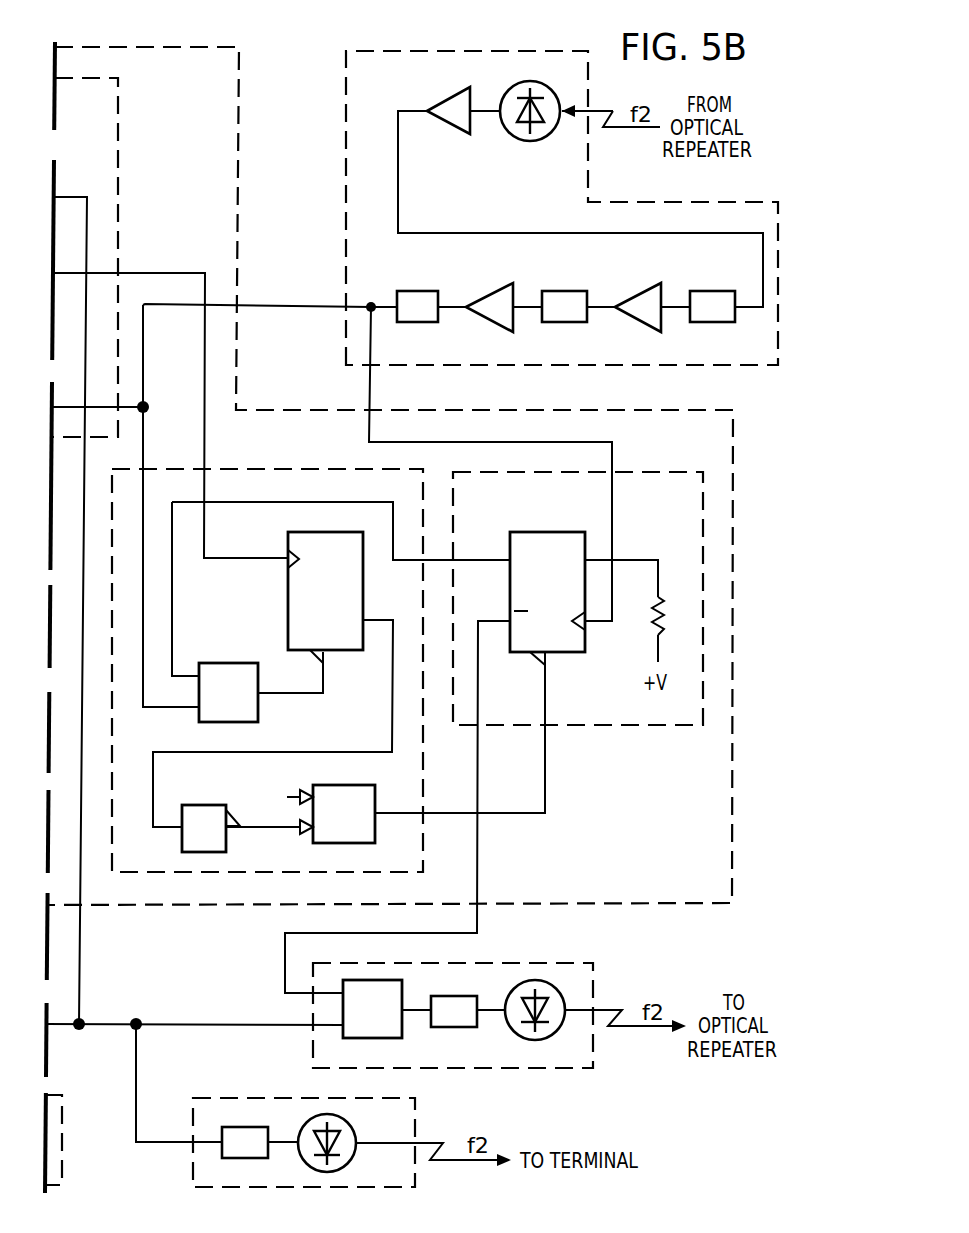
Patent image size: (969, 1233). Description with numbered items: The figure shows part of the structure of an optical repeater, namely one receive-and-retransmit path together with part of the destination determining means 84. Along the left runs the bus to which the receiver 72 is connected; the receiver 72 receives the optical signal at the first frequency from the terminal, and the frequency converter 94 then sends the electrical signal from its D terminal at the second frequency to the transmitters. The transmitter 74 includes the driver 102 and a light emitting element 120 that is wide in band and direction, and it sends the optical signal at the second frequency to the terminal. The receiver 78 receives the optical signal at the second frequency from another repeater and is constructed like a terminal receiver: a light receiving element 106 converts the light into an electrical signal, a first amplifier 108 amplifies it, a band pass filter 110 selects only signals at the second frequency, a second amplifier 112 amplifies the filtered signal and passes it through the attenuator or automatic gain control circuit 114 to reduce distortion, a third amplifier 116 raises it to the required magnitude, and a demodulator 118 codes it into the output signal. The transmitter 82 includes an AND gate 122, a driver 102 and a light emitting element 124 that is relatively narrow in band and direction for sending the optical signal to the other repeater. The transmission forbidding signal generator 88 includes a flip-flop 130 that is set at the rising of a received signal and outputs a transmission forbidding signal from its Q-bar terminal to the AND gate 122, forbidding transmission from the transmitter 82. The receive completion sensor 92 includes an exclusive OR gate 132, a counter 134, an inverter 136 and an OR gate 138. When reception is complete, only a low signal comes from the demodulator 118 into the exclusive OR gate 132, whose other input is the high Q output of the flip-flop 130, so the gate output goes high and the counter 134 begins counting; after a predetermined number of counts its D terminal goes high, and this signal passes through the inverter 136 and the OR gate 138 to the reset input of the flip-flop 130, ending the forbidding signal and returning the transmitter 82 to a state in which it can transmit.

The receiver 72 is at (63, 1113).
The transmitter 74 is at (259, 1095).
The receiver 78 is at (342, 200).
The transmitter 82 is at (600, 970).
The destination determining means 84 is at (239, 107).
The transmission forbidding signal generator 88 is at (632, 468).
The receive completion sensor 92 is at (305, 470).
The frequency converter 94 is at (120, 130).
The driver 102 is at (463, 1002).
The light receiving element 106 is at (533, 140).
The first amplifier 108 is at (447, 108).
The band pass filter 110 is at (718, 298).
The second amplifier 112 is at (645, 325).
The attenuator or automatic gain control circuit 114 is at (568, 298).
The third amplifier 116 is at (497, 325).
The demodulator 118 is at (420, 295).
The light emitting element 120 is at (348, 1122).
The AND gate 122 is at (393, 1028).
The light emitting element 124 is at (520, 1037).
The flip-flop 130 is at (545, 542).
The exclusive OR gate 132 is at (253, 712).
The counter 134 is at (288, 603).
The inverter 136 is at (183, 842).
The OR gate 138 is at (317, 837).